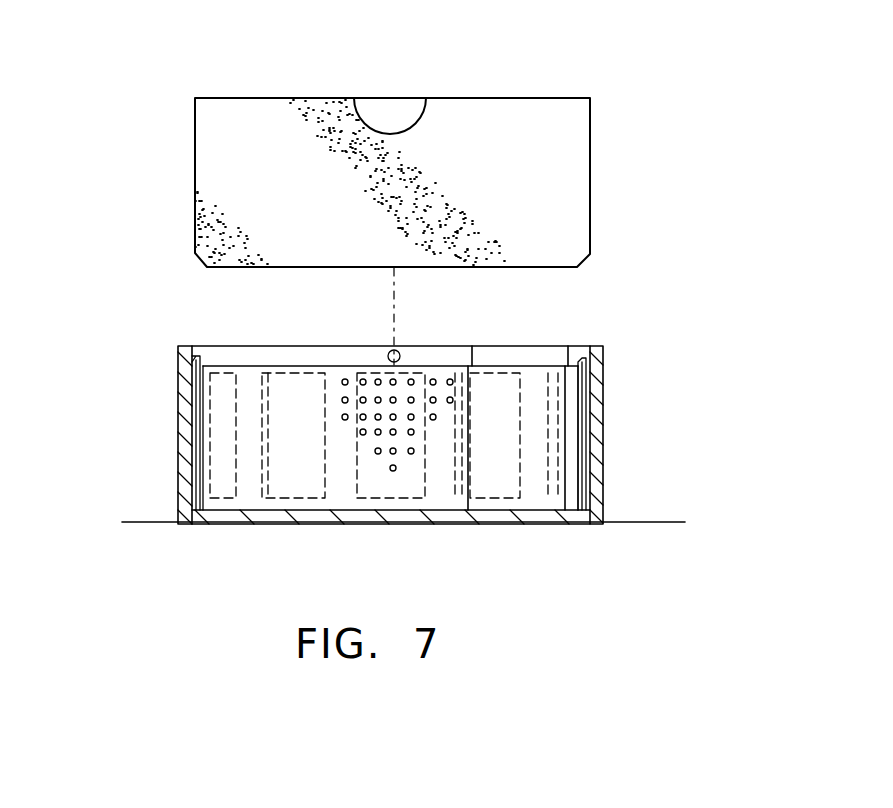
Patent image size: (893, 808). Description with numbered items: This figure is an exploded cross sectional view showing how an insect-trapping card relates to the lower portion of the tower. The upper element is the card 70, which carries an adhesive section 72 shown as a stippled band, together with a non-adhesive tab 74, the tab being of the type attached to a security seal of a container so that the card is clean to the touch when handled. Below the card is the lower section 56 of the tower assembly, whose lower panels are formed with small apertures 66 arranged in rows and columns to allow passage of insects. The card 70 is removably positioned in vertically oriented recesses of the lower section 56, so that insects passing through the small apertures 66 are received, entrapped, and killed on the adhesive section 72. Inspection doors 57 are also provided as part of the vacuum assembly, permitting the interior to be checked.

The card 70 is at (193, 160).
The adhesive section 72 is at (440, 185).
The non-adhesive tab 74 is at (385, 118).
The small apertures 66 is at (396, 378).
The inspection doors 57 is at (538, 348).
The lower section 56 is at (604, 437).